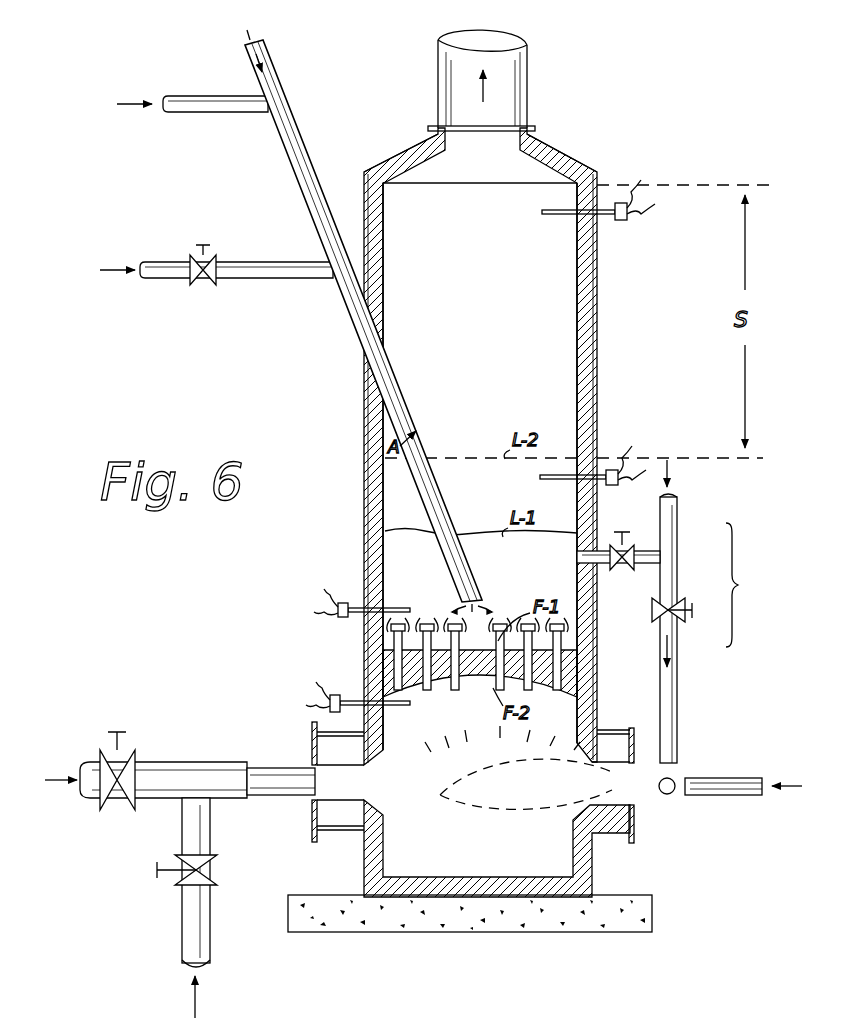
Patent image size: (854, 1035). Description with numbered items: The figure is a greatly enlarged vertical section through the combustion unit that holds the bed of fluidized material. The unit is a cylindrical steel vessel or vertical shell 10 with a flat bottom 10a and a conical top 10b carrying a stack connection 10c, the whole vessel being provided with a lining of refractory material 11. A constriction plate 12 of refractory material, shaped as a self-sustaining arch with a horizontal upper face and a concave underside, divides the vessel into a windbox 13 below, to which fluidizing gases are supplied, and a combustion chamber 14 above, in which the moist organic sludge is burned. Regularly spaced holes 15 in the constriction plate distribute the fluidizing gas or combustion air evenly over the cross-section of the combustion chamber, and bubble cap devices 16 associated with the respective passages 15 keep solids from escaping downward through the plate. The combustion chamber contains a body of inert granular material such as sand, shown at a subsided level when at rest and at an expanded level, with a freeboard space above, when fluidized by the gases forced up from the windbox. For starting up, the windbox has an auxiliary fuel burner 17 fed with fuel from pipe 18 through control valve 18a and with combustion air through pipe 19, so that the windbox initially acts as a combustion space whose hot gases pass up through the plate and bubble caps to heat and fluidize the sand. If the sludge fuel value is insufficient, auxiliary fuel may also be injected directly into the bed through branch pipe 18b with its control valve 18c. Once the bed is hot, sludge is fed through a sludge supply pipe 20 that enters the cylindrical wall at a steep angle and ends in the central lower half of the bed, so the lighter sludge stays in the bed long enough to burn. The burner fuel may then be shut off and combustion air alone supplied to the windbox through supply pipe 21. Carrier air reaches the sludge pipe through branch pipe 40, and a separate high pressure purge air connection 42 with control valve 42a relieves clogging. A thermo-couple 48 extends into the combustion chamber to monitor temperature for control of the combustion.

The vertical shell 10 is at (606, 352).
The flat bottom 10a is at (449, 866).
The conical top 10b is at (568, 163).
The stack connection 10c is at (528, 108).
The refractory lining 11 is at (577, 320).
The constriction plate 12 is at (472, 700).
The windbox 13 is at (491, 842).
The combustion chamber 14 is at (492, 356).
The holes 15 is at (458, 691).
The bubble cap devices 16 is at (426, 623).
The auxiliary fuel burner 17 is at (670, 813).
The pipe 18 is at (752, 585).
The control valve 18a is at (660, 614).
The branch pipe 18b is at (648, 565).
The control valve 18c is at (636, 518).
The pipe 19 is at (733, 778).
The sludge supply pipe 20 is at (410, 409).
The supply pipe 21 is at (213, 765).
The branch pipe 40 is at (225, 112).
The high pressure purge air connection 42 is at (305, 278).
The control valve 42a is at (182, 286).
The thermo-couple 48 is at (384, 605).